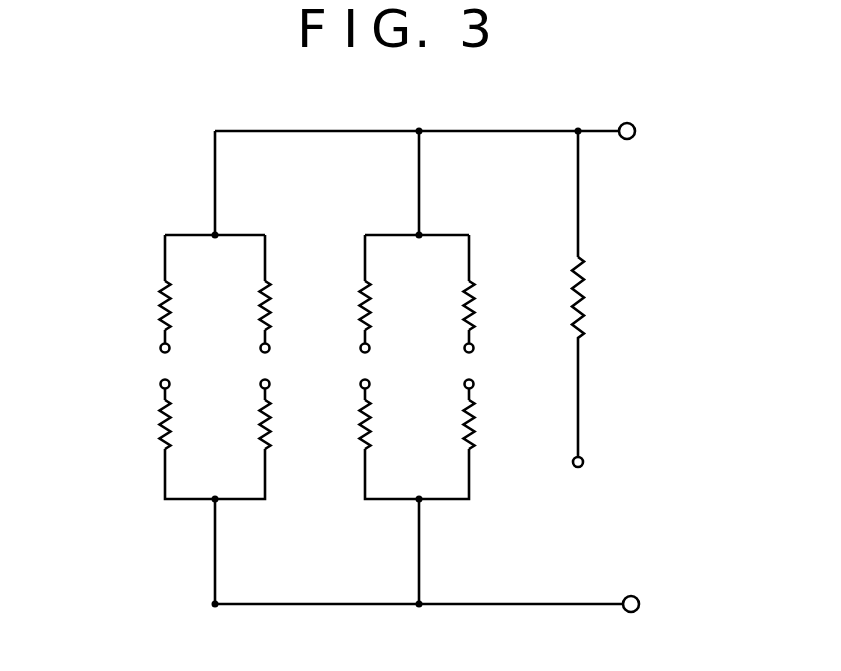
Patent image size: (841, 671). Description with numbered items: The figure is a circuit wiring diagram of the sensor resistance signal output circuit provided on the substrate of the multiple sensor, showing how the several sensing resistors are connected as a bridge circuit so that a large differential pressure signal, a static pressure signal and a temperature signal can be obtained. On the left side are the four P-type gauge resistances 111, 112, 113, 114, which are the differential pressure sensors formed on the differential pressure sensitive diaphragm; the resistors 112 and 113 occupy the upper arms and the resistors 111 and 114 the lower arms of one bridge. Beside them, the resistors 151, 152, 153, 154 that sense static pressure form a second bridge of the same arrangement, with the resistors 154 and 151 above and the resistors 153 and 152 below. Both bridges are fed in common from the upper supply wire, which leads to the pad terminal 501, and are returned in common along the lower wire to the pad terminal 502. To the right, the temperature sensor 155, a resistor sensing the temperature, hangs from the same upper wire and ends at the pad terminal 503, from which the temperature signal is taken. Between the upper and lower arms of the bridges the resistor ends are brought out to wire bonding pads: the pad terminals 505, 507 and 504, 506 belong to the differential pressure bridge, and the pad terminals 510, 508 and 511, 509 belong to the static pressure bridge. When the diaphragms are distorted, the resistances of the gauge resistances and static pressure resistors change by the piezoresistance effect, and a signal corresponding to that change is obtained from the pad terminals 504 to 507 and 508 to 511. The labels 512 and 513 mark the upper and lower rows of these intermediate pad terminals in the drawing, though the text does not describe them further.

The gauge resistance 111 is at (160, 440).
The gauge resistance 112 is at (158, 318).
The gauge resistance 113 is at (258, 302).
The gauge resistance 114 is at (257, 421).
The static pressure sensing resistor 151 is at (460, 310).
The static pressure sensing resistor 152 is at (462, 420).
The static pressure sensing resistor 153 is at (358, 440).
The static pressure sensing resistor 154 is at (355, 312).
The temperature sensor 155 is at (584, 320).
The pad terminal 501 is at (635, 128).
The pad terminal 502 is at (638, 600).
The pad terminal 503 is at (583, 462).
The pad terminal 504 is at (168, 387).
The pad terminal 505 is at (169, 348).
The pad terminal 506 is at (268, 387).
The pad terminal 507 is at (269, 348).
The pad terminal 508 is at (473, 348).
The pad terminal 509 is at (472, 387).
The pad terminal 510 is at (369, 348).
The pad terminal 511 is at (368, 387).
The upper terminal row 512 is at (73, 348).
The lower terminal row 513 is at (72, 398).